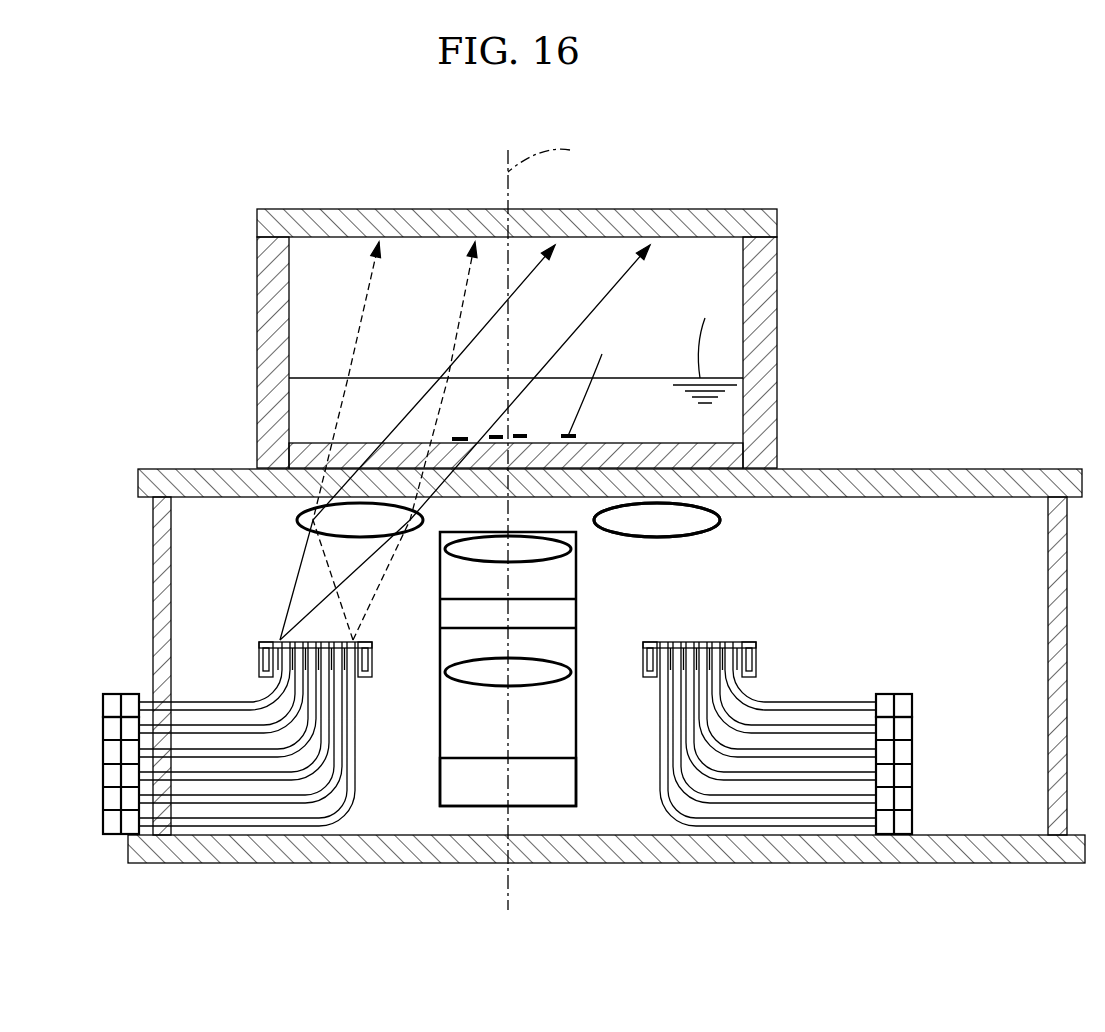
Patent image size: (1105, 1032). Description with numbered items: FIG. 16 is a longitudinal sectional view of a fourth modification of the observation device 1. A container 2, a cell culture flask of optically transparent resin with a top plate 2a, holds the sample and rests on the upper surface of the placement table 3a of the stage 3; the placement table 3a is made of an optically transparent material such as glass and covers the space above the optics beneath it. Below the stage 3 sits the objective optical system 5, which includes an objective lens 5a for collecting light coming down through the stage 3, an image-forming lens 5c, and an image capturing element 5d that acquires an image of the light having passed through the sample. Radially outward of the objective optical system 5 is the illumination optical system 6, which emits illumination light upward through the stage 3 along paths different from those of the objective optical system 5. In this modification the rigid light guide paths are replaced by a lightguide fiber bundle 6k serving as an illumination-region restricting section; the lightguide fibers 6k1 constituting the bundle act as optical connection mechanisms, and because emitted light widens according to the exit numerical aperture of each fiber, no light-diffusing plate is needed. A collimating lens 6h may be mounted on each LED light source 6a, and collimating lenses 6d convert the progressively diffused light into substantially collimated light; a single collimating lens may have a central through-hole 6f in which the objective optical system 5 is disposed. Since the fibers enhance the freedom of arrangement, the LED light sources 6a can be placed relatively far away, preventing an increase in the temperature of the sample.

The observation device 1 is at (185, 195).
The container 2 is at (855, 260).
The top plate 2a is at (690, 209).
The stage 3 is at (1014, 462).
The placement table 3a is at (928, 468).
The objective optical system 5 is at (590, 632).
The objective lens 5a is at (460, 558).
The image-forming lens 5c is at (530, 682).
The image capturing element 5d is at (541, 758).
The illumination optical system 6 is at (880, 600).
The LED light source 6a is at (103, 697).
The collimating lens 6d is at (297, 519).
The through-hole 6f is at (600, 530).
The collimating lens 6h is at (125, 694).
The lightguide fiber bundle 6k is at (232, 690).
The lightguide fiber 6k1 is at (193, 700).